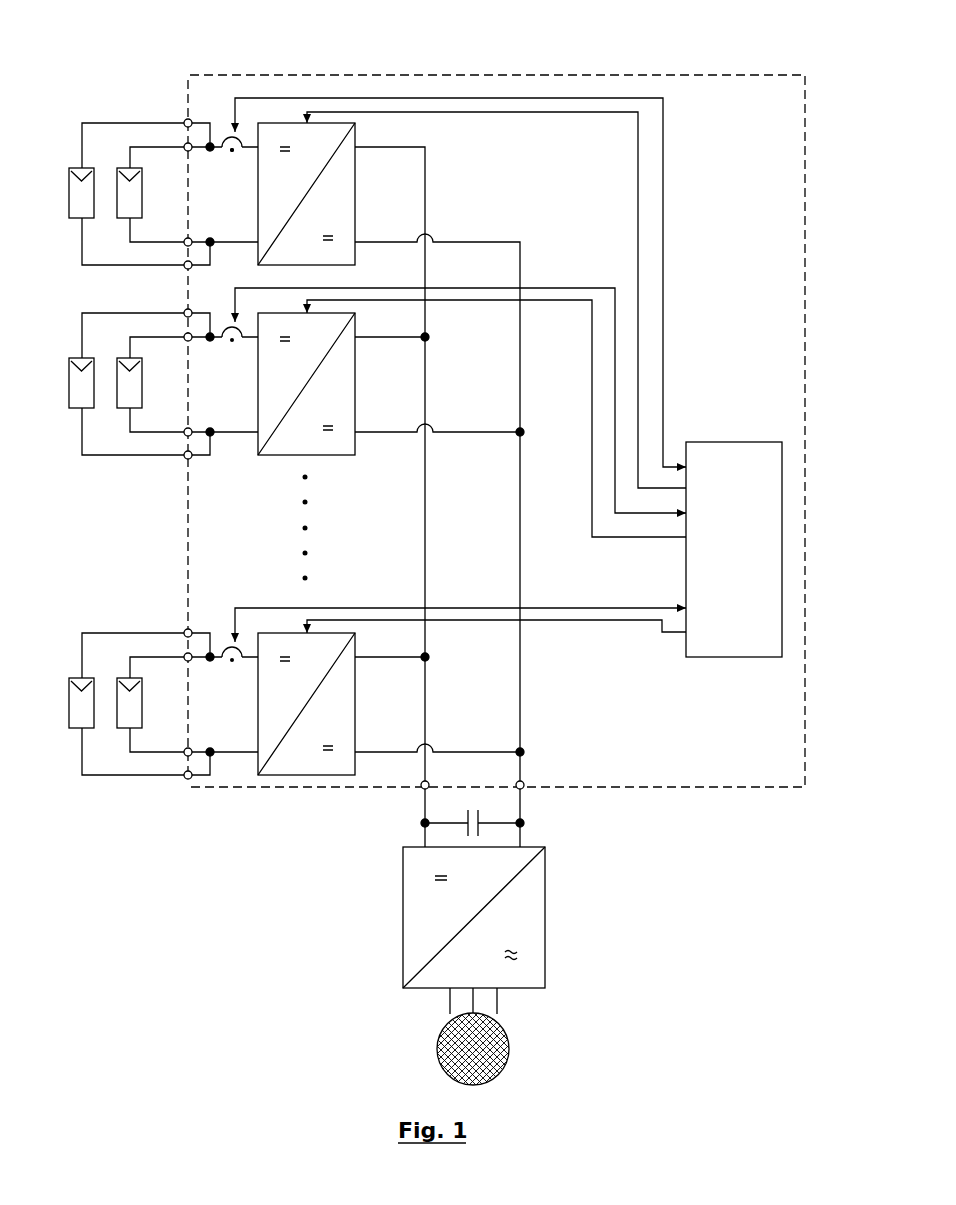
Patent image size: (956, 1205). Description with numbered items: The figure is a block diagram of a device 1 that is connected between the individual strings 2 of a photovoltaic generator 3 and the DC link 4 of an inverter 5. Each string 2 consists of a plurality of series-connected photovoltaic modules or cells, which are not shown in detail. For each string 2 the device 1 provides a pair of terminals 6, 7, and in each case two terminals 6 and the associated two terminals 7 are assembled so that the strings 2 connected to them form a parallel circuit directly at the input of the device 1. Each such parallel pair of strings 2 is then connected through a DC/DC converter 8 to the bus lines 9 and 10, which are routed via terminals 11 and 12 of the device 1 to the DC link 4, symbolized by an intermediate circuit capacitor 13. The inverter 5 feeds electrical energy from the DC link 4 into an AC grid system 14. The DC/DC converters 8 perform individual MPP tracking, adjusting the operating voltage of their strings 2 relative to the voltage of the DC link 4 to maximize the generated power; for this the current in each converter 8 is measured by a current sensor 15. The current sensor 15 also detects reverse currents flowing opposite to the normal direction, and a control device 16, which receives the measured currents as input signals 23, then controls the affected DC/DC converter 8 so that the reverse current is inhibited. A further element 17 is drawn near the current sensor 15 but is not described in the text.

The device 1 is at (280, 790).
The strings 2 is at (122, 220).
The photovoltaic generator 3 is at (105, 785).
The DC link 4 is at (528, 823).
The inverter 5 is at (547, 930).
The terminals 6 is at (191, 267).
The terminals 7 is at (185, 145).
The DC/DC converter 8 is at (357, 127).
The bus line 9 is at (425, 707).
The bus line 10 is at (520, 690).
The terminal 11 is at (423, 790).
The terminal 12 is at (523, 788).
The intermediate circuit capacitor 13 is at (480, 830).
The AC grid system 14 is at (505, 1065).
The current sensor 15 is at (228, 128).
The control device 16 is at (754, 443).
The switch contact 17 is at (220, 158).
The input signals 23 is at (616, 368).